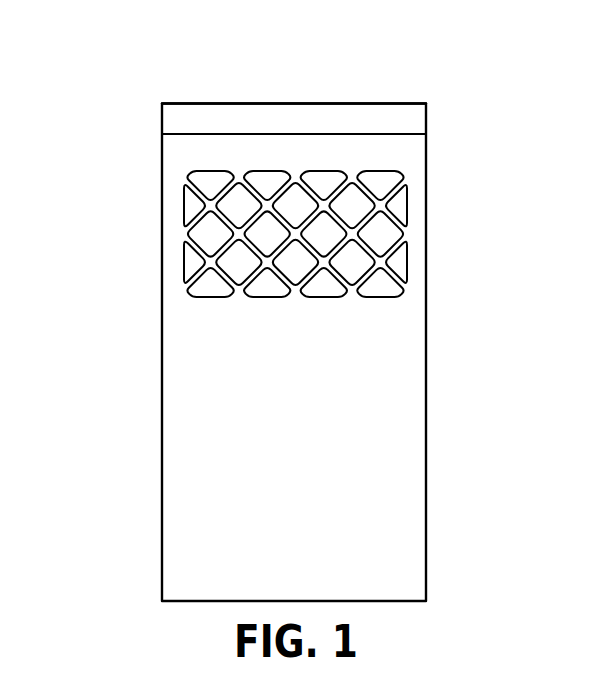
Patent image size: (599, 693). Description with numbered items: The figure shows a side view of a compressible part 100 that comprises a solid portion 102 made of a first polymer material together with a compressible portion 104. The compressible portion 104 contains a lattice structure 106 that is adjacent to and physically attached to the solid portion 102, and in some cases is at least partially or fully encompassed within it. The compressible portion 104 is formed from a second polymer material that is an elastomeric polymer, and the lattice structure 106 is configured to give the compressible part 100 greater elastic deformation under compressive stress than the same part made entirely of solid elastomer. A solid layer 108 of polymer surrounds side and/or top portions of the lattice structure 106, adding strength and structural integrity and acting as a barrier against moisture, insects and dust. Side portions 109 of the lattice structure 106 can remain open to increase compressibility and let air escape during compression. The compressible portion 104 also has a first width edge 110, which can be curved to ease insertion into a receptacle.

The compressible part 100 is at (112, 57).
The solid portion 102 is at (427, 448).
The compressible portion 104 is at (432, 171).
The lattice structure 106 is at (184, 236).
The solid layer 108 is at (213, 103).
The side portions 109 is at (185, 204).
The first width edge 110 is at (367, 117).